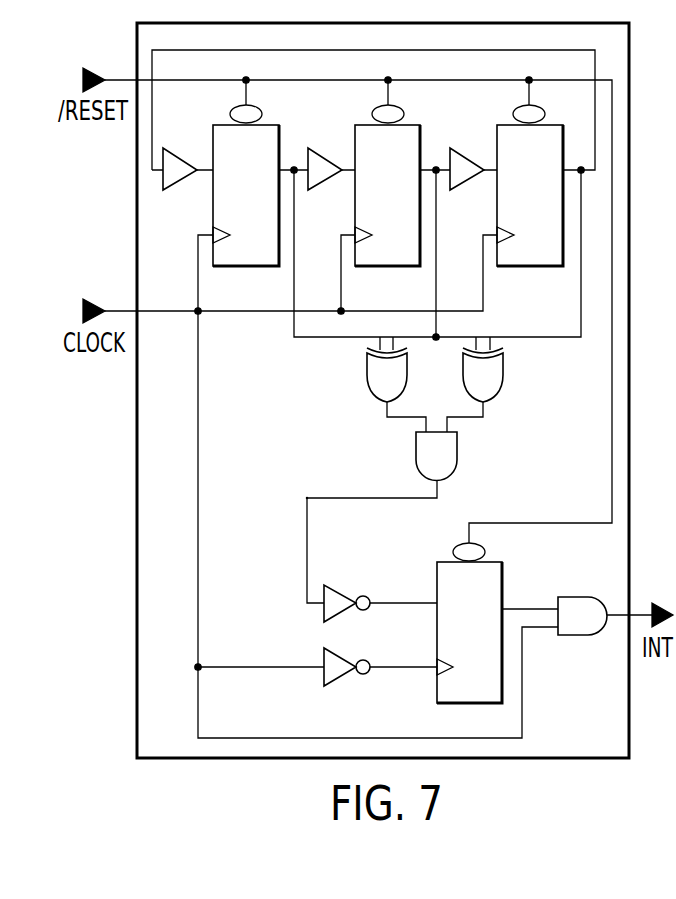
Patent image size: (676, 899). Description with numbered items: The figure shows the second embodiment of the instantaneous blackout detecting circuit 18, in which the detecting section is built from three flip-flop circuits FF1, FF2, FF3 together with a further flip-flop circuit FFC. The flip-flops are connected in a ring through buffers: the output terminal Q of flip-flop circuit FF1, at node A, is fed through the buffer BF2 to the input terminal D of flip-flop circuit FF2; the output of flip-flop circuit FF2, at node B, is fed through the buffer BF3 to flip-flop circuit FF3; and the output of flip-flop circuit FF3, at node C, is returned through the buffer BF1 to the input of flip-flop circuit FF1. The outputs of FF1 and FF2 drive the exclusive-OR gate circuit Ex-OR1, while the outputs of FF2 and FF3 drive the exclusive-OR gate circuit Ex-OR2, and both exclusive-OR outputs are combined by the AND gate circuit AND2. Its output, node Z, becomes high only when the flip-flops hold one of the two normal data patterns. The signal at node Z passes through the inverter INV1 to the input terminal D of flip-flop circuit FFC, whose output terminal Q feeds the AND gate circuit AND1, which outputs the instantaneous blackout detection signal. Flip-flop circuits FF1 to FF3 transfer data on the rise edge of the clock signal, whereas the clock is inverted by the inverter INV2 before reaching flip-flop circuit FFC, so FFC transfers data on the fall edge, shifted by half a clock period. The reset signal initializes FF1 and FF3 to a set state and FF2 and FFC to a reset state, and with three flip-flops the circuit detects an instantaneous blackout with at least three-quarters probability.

The instantaneous blackout detecting circuit 18 is at (575, 761).
The buffer BF1 is at (188, 138).
The buffer BF2 is at (332, 138).
The buffer BF3 is at (475, 138).
The flip-flop circuit FF1 is at (250, 267).
The flip-flop circuit FF2 is at (390, 267).
The flip-flop circuit FF3 is at (531, 267).
The node A is at (293, 166).
The node B is at (435, 166).
The node C is at (581, 166).
The exclusive-OR gate circuit Ex-OR1 is at (367, 375).
The exclusive-OR gate circuit Ex-OR2 is at (503, 375).
The AND gate circuit AND2 is at (457, 452).
The node Z is at (343, 496).
The inverter INV1 is at (347, 595).
The inverter INV2 is at (347, 660).
The flip-flop circuit FFC is at (433, 694).
The AND gate circuit AND1 is at (573, 595).